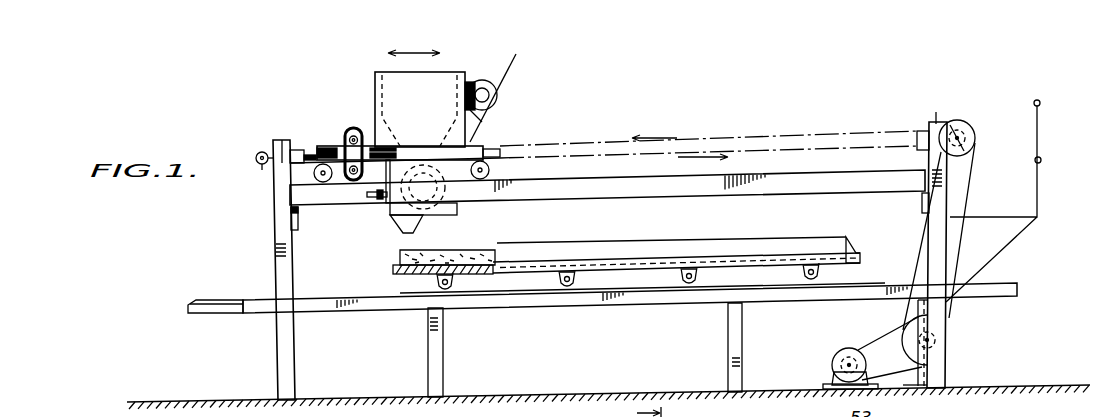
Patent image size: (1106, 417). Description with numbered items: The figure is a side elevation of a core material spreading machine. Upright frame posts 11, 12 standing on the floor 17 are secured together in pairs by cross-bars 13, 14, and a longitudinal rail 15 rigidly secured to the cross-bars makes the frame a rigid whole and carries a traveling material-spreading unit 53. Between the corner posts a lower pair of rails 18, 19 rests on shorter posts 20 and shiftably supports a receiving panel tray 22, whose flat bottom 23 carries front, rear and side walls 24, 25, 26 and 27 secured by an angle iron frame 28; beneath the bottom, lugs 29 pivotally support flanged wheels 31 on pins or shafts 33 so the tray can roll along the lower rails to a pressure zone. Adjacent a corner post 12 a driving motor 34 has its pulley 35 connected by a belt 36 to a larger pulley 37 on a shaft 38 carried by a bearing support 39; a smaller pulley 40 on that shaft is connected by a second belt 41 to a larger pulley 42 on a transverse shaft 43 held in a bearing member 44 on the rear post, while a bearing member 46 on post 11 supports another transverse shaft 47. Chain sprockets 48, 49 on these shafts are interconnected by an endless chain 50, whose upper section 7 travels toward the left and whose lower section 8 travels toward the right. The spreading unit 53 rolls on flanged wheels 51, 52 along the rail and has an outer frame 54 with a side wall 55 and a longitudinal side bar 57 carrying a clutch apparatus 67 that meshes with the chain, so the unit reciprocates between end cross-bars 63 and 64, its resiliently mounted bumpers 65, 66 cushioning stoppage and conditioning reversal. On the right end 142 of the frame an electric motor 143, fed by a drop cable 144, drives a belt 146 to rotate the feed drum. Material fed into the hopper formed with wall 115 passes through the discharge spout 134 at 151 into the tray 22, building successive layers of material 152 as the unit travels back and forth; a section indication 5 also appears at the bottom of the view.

The section line 5 is at (669, 410).
The upper section of chain 7 is at (810, 135).
The lower section of chain 8 is at (773, 150).
The upright frame post 11 is at (276, 265).
The upright frame post 12 is at (949, 310).
The cross-bar 13 is at (298, 228).
The cross-bar 14 is at (921, 205).
The longitudinal rail 15 is at (583, 194).
The floor 17 is at (237, 399).
The lower rail 18 is at (327, 314).
The lower rail 19 is at (218, 316).
The shorter post 20 is at (466, 370).
The receiving panel tray 22 is at (770, 243).
The flat bottom 23 is at (494, 271).
The front wall 24 is at (400, 254).
The rear wall 25 is at (856, 256).
The side wall 26 is at (470, 210).
The side wall 27 is at (545, 232).
The angle iron frame 28 is at (393, 270).
The lug 29 is at (455, 284).
The flanged wheel 31 is at (437, 282).
The pin or shaft 33 is at (452, 286).
The driving motor 34 is at (832, 365).
The motor pulley 35 is at (846, 348).
The belt 36 is at (868, 350).
The pulley 37 is at (910, 350).
The shaft 38 is at (931, 340).
The bearing support 39 is at (929, 375).
The pulley 40 is at (918, 318).
The second belt 41 is at (975, 200).
The pulley 42 is at (978, 150).
The transverse shaft 43 is at (959, 138).
The bearing member 44 is at (936, 122).
The bearing member 46 is at (282, 140).
The transverse shaft 47 is at (257, 153).
The chain sprocket 48 is at (958, 120).
The chain sprocket 49 is at (262, 166).
The endless chain 50 is at (745, 140).
The flanged wheel 51 is at (325, 182).
The flanged wheel 52 is at (490, 170).
The material-spreading unit 53 is at (377, 67).
The outer frame 54 is at (375, 95).
The side wall 55 is at (432, 146).
The longitudinal side bar 57 is at (333, 150).
The end cross-bar 63 is at (297, 150).
The end cross-bar 64 is at (920, 135).
The bumper 65 is at (314, 147).
The bumper 66 is at (497, 150).
The clutch apparatus 67 is at (362, 124).
The hopper wall 115 is at (786, 411).
The discharge spout 134 is at (392, 226).
The right end of unit frame 142 is at (493, 96).
The electric motor 143 is at (496, 101).
The drop cable 144 is at (497, 87).
The belt 146 is at (480, 123).
The discharge point 151 is at (421, 222).
The layers of material 152 is at (487, 237).